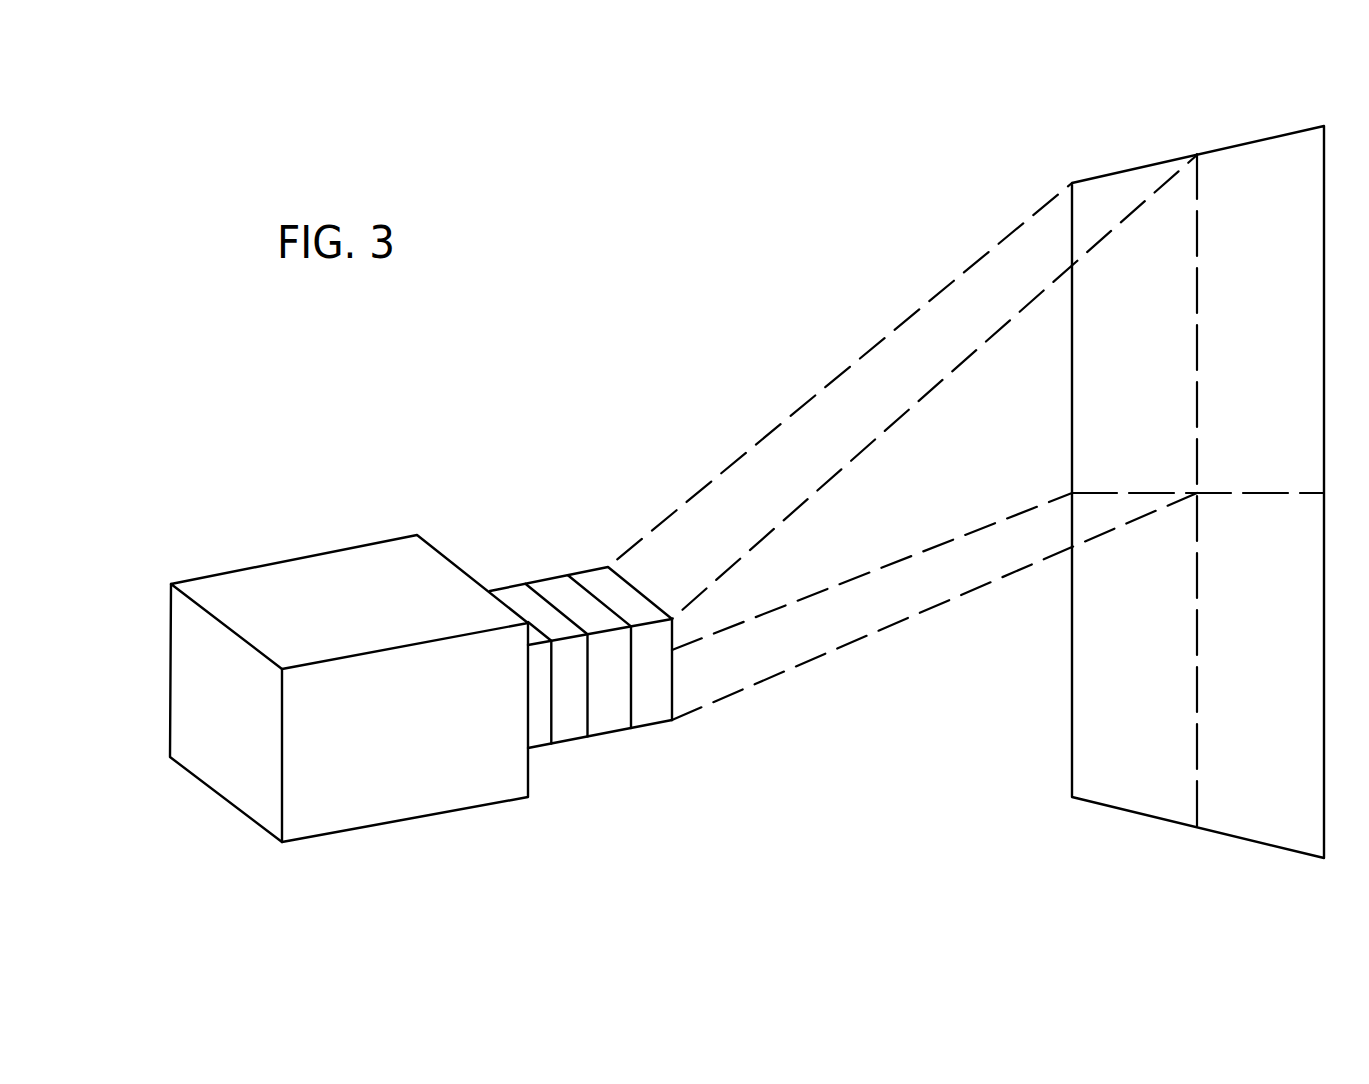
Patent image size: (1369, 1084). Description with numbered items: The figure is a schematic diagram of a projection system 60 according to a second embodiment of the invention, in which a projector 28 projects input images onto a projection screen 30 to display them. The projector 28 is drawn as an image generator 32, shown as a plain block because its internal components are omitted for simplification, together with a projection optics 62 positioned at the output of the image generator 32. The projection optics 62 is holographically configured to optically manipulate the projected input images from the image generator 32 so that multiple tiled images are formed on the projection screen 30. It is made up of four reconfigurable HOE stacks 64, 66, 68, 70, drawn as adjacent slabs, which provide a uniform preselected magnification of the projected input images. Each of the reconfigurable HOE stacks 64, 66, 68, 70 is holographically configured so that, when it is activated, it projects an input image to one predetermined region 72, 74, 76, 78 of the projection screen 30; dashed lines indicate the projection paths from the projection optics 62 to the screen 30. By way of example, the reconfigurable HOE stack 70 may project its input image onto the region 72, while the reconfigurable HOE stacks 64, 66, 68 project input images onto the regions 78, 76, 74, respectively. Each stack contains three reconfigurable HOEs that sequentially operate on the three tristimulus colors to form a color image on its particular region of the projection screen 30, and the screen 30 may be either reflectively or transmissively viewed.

The projector 28 is at (685, 842).
The projection screen 30 is at (1266, 136).
The image generator 32 is at (315, 565).
The projection system 60 is at (581, 364).
The projection optics 62 is at (607, 566).
The reconfigurable HOE stack 64 is at (537, 742).
The reconfigurable HOE stack 66 is at (570, 732).
The reconfigurable HOE stack 68 is at (609, 725).
The reconfigurable HOE stack 70 is at (653, 718).
The region 72 is at (1123, 358).
The region 74 is at (1251, 358).
The region 76 is at (1121, 668).
The region 78 is at (1249, 668).